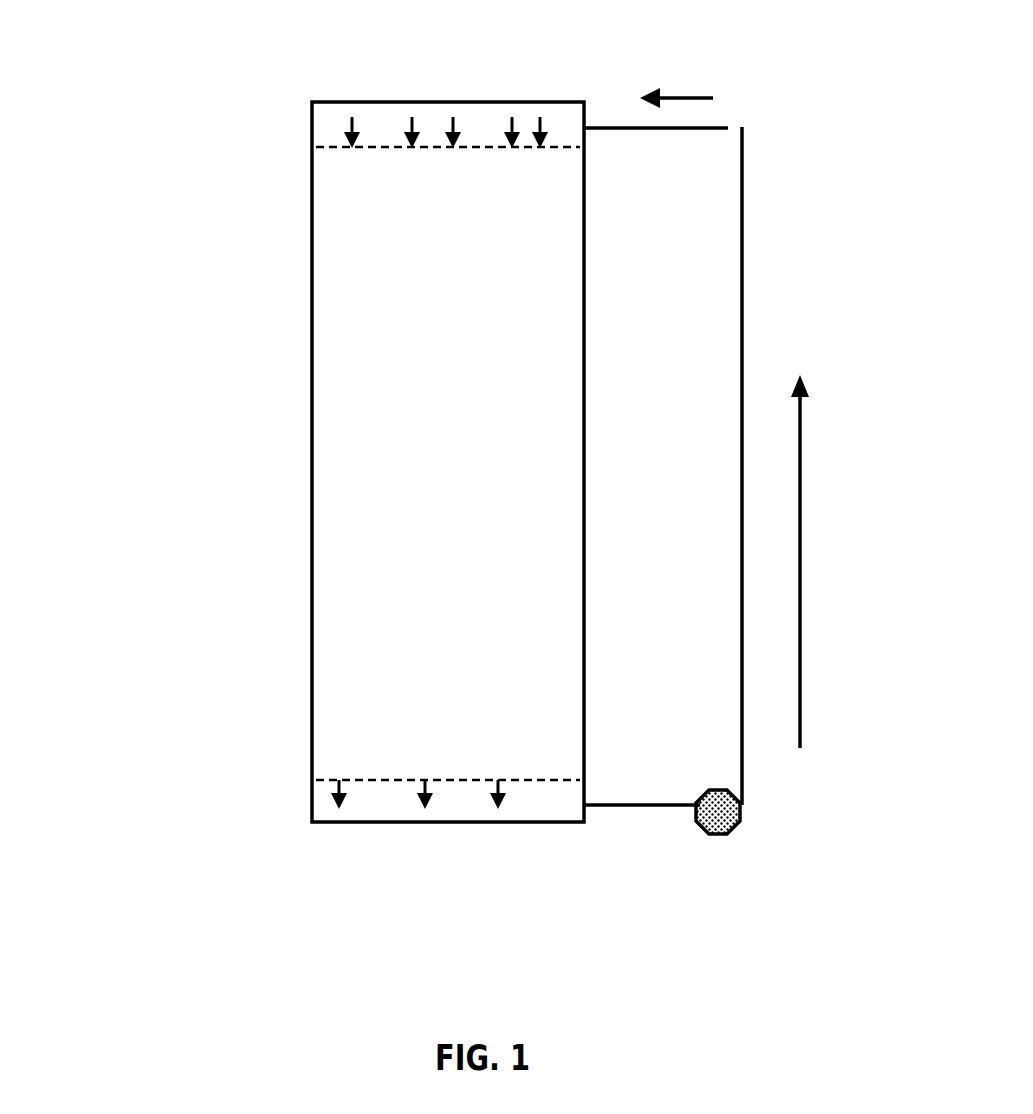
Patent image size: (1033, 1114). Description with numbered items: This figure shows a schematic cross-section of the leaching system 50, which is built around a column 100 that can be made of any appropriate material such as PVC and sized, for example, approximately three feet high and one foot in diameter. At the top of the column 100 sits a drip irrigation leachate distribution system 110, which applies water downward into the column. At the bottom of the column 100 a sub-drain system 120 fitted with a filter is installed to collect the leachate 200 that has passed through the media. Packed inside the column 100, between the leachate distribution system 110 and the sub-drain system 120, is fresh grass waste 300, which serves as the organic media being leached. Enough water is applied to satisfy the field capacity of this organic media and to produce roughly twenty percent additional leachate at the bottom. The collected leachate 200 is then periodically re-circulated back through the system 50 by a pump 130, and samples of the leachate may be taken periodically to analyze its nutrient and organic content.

The system 50 is at (215, 292).
The cell body 100 is at (312, 187).
The inlet arrows / feed 110 is at (352, 122).
The outlet arrows / discharge 120 is at (312, 807).
The pump 130 is at (741, 808).
The recirculation loop 200 is at (800, 527).
The cell interior / electrolyte 300 is at (370, 450).